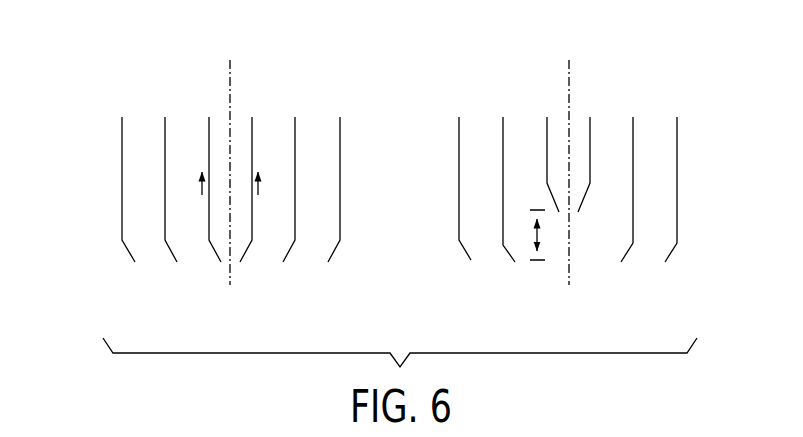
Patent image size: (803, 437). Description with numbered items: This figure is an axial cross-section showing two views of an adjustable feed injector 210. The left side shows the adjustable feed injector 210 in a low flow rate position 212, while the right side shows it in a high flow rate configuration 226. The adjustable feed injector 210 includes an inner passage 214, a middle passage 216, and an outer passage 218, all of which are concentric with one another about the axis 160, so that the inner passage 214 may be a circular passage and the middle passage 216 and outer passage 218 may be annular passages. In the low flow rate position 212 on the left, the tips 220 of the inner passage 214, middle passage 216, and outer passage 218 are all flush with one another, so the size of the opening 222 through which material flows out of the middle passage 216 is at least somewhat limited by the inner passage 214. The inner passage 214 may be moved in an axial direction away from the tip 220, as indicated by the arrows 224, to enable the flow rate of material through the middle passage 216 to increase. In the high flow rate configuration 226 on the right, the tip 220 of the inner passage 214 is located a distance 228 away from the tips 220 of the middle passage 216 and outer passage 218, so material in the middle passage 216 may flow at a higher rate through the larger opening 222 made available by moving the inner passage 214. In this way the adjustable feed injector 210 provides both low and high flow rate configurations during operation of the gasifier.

The axis 160 is at (232, 77).
The adjustable feed injector 210 is at (441, 51).
The low flow rate position 212 is at (95, 125).
The inner passage 214 is at (208, 147).
The middle passage 216 is at (164, 133).
The outer passage 218 is at (122, 178).
The tips 220 is at (218, 263).
The opening 222 is at (188, 291).
The arrows 224 is at (262, 183).
The high flow rate configuration 226 is at (699, 131).
The distance 228 is at (537, 240).